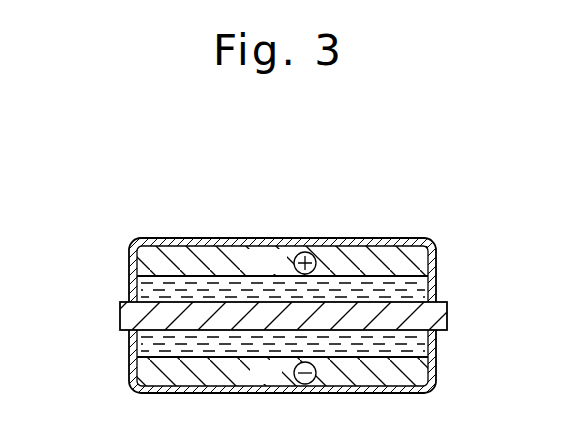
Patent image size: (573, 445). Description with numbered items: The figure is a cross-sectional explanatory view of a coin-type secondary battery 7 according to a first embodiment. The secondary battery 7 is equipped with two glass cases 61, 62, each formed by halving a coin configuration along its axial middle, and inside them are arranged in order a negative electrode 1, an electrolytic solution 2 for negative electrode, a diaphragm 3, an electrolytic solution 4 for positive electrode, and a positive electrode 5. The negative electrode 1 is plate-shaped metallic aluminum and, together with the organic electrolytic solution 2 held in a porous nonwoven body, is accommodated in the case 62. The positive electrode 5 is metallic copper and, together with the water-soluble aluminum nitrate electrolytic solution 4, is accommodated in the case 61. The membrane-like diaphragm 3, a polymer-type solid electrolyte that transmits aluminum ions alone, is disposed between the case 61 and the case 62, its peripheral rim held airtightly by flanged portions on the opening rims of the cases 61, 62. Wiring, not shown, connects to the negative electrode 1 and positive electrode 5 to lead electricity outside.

The negative electrode 1 is at (417, 368).
The electrolytic solution for negative electrode 2 is at (413, 342).
The diaphragm 3 is at (443, 313).
The electrolytic solution for positive electrode 4 is at (413, 291).
The positive electrode 5 is at (417, 260).
The case 61 is at (132, 290).
The case 62 is at (132, 348).
The secondary battery 7 is at (284, 272).